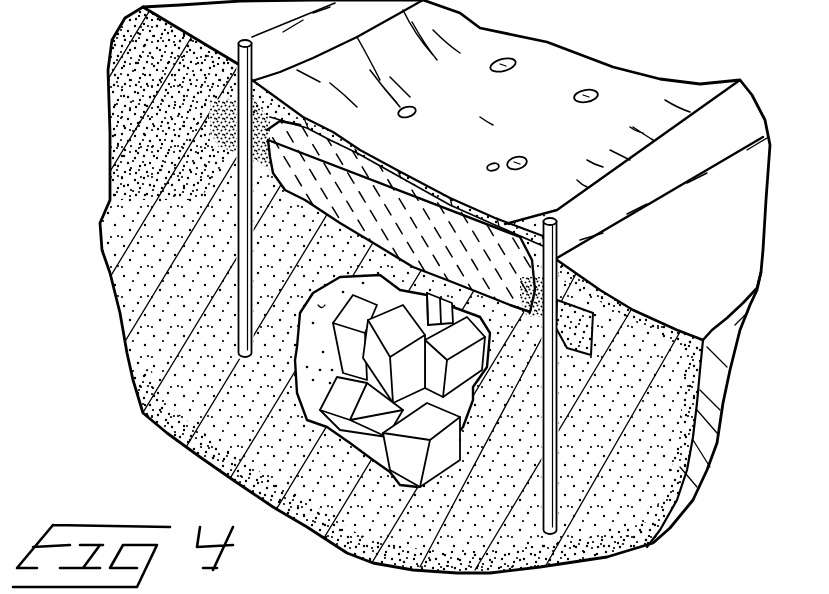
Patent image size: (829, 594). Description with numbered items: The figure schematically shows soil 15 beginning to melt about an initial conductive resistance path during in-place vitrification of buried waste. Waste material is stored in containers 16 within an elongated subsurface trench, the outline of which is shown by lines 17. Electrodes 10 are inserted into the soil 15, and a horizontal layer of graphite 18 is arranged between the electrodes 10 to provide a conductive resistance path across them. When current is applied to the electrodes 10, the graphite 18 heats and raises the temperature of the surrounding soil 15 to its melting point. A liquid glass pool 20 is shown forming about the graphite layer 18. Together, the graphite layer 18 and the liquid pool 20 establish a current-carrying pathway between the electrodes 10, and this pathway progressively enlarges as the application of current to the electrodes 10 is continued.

The electrodes 10 is at (240, 40).
The soil 15 is at (628, 312).
The containers 16 is at (405, 340).
The lines 17 is at (618, 224).
The graphite 18 is at (574, 327).
The liquid glass pool 20 is at (409, 215).